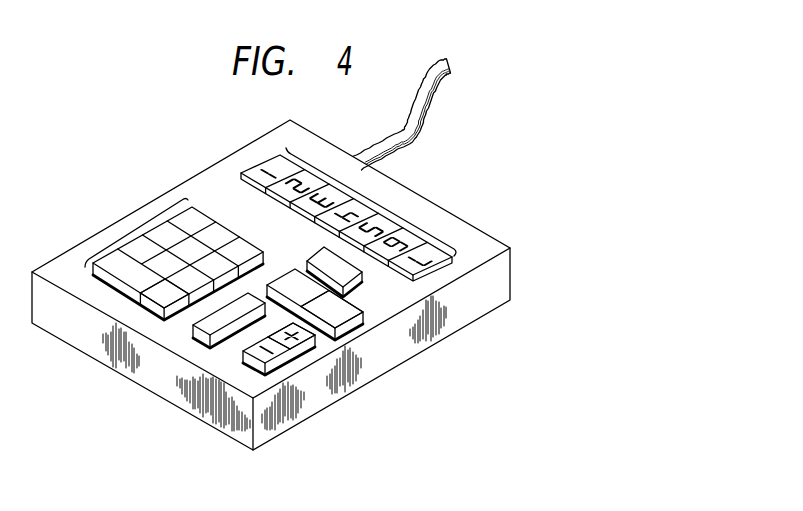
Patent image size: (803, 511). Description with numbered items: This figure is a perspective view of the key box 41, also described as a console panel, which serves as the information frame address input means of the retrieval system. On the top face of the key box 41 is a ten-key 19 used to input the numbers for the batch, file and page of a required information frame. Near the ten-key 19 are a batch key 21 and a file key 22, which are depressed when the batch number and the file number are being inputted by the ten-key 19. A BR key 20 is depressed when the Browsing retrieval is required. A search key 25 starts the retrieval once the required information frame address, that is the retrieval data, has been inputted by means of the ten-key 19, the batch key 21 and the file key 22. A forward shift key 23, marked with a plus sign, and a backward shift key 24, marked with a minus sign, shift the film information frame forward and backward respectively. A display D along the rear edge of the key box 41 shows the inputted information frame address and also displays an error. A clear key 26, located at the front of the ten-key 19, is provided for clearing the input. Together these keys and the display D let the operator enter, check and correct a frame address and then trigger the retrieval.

The ten-key 19 is at (135, 226).
The BR key 20 is at (313, 256).
The batch key 21 is at (284, 274).
The file key 22 is at (357, 306).
The forward shift key 23 is at (304, 350).
The backward shift key 24 is at (278, 367).
The search key 25 is at (206, 343).
The clear key 26 is at (152, 308).
The key box 41 is at (400, 357).
The display D is at (377, 197).